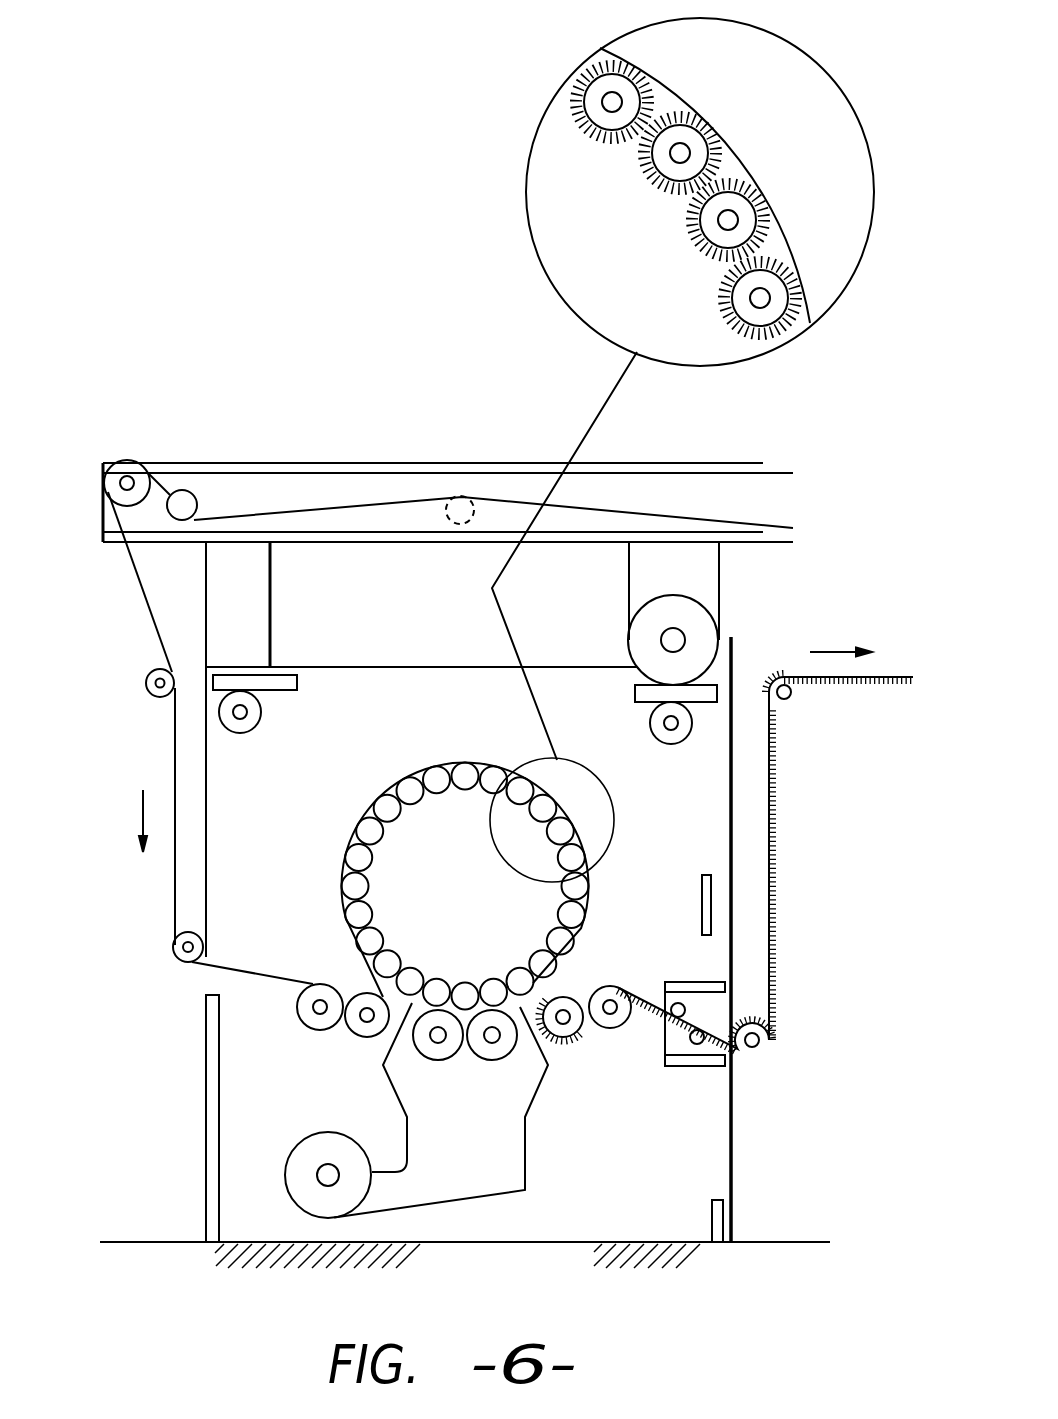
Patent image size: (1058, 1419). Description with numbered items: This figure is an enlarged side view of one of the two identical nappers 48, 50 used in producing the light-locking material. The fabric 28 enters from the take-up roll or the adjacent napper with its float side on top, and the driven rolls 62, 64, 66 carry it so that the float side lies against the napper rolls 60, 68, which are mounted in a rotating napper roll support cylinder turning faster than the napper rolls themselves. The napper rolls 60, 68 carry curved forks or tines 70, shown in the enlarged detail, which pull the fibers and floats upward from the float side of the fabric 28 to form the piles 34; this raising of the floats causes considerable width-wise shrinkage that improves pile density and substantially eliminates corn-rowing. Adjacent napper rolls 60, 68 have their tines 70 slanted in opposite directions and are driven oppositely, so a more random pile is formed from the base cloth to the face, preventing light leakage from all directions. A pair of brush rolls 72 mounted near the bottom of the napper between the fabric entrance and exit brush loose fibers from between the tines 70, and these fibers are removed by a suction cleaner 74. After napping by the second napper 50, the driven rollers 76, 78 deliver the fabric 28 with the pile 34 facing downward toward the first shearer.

The fabric 28 is at (717, 518).
The piles 34 is at (772, 827).
The napper 48 is at (190, 769).
The napper 50 is at (181, 988).
The napper rolls 60 is at (368, 862).
The driven roll 62 is at (108, 483).
The driven roll 64 is at (317, 1018).
The driven roll 66 is at (367, 1028).
The napper rolls 68 is at (380, 833).
The forks or tines 70 is at (650, 82).
The brush rolls 72 is at (497, 1052).
The suction cleaner 74 is at (287, 1167).
The driven roller 76 is at (572, 1025).
The driven roller 78 is at (620, 1015).